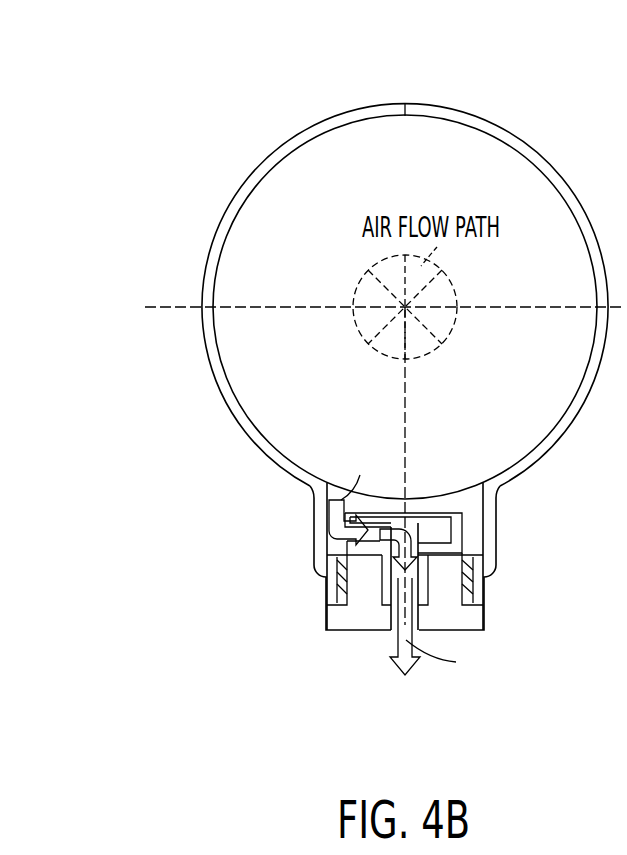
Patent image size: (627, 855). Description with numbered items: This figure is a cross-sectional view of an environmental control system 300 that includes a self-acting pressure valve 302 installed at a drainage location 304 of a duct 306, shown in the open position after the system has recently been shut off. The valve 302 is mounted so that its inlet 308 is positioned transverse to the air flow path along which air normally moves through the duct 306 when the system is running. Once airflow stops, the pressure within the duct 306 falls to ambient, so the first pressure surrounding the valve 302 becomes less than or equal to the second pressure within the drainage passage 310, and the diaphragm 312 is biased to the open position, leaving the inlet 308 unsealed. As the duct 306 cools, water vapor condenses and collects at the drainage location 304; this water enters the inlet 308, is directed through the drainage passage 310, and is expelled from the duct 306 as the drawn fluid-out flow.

The environmental control system 300 is at (168, 98).
The self-acting pressure valve 302 is at (455, 496).
The drainage location 304 is at (298, 470).
The duct 306 is at (246, 246).
The inlet 308 is at (331, 541).
The drainage passage 310 is at (382, 592).
The diaphragm 312 is at (414, 518).